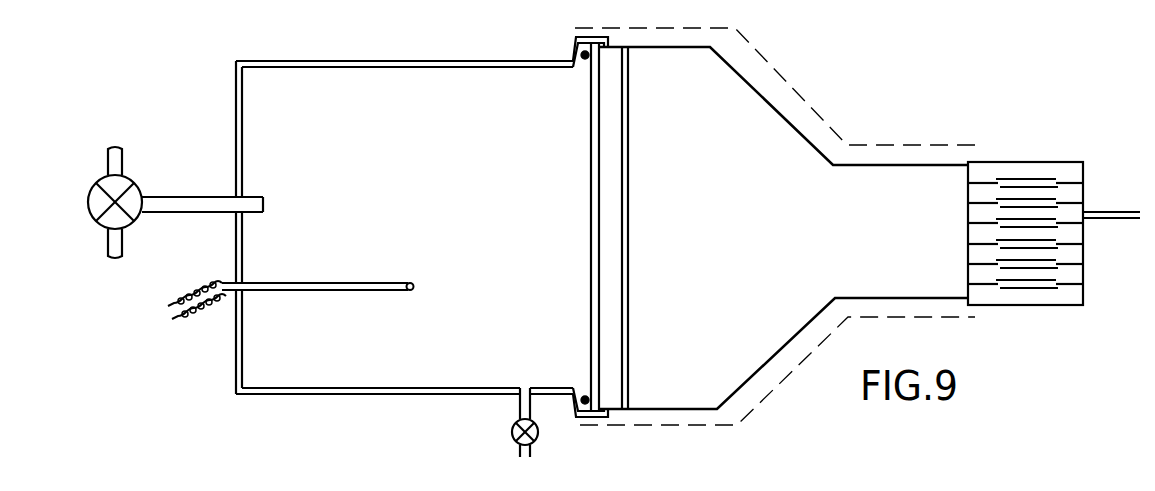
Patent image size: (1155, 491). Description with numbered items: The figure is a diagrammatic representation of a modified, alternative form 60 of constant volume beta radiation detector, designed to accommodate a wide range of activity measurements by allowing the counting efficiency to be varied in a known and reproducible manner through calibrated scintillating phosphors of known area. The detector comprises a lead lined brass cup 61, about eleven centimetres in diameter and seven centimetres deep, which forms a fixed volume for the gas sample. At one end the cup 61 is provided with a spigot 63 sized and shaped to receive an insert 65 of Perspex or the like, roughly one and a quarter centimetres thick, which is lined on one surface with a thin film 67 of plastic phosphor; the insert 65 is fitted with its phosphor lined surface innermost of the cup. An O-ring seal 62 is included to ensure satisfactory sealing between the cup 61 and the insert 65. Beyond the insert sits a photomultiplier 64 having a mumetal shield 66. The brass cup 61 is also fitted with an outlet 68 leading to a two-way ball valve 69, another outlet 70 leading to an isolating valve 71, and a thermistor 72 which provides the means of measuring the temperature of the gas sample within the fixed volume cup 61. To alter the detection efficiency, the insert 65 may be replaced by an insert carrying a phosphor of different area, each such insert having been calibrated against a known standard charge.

The alternative form of constant volume beta radiation detector 60 is at (768, 421).
The lead lined brass cup 61 is at (290, 396).
The O-ring seal 62 is at (586, 396).
The spigot 63 is at (582, 419).
The photomultiplier 64 is at (880, 300).
The insert 65 is at (615, 398).
The mumetal shield 66 is at (783, 86).
The film of plastic phosphor 67 is at (596, 205).
The outlet 68 is at (263, 198).
The two-way ball valve 69 is at (102, 187).
The outlet 70 is at (518, 409).
The isolating valve 71 is at (537, 441).
The thermistor 72 is at (351, 282).